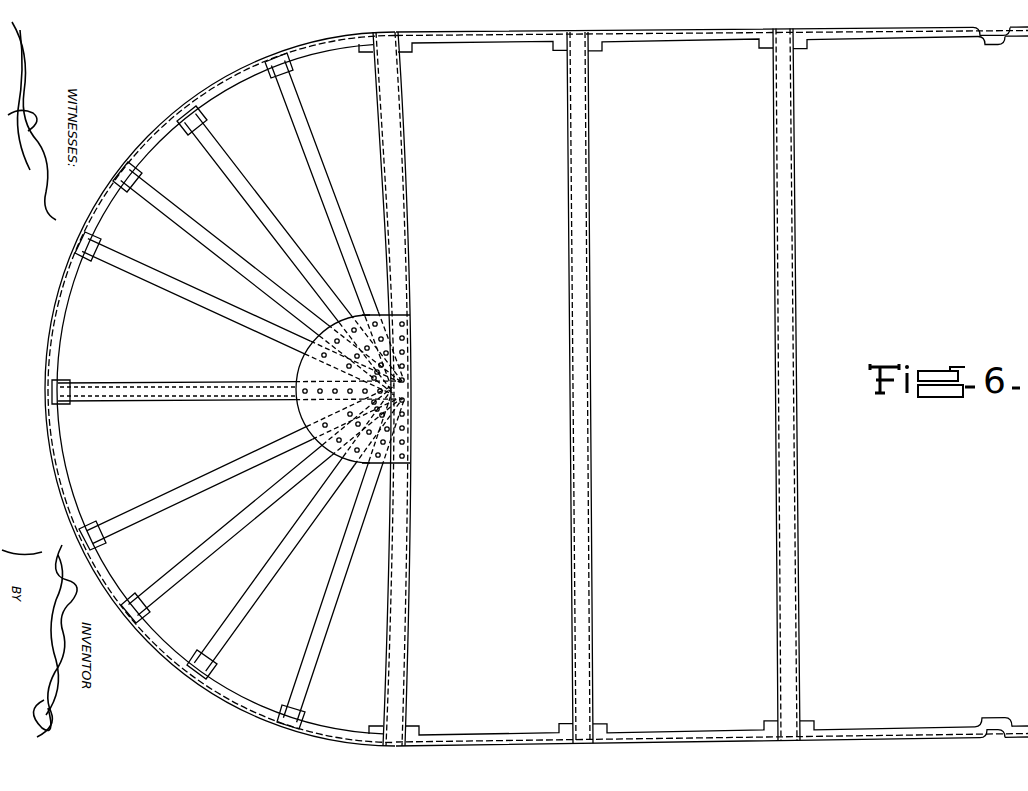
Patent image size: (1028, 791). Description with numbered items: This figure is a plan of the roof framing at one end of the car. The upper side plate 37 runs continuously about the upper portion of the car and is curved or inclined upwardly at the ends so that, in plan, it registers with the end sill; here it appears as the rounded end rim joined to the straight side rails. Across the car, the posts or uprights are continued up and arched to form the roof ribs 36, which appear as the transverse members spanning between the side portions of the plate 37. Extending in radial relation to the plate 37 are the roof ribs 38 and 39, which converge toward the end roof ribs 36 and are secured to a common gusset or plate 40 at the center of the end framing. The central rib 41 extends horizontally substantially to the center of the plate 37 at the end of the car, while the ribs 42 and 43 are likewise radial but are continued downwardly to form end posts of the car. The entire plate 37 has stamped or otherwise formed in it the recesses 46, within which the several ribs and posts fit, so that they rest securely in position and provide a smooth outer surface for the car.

The roof ribs 36 is at (402, 632).
The upper side plate 37 is at (500, 41).
The roof rib 38 is at (326, 612).
The roof rib 39 is at (223, 534).
The gusset or plate 40 is at (405, 385).
The central rib 41 is at (125, 391).
The rib 42 is at (302, 526).
The rib 43 is at (135, 516).
The recesses 46 is at (986, 40).